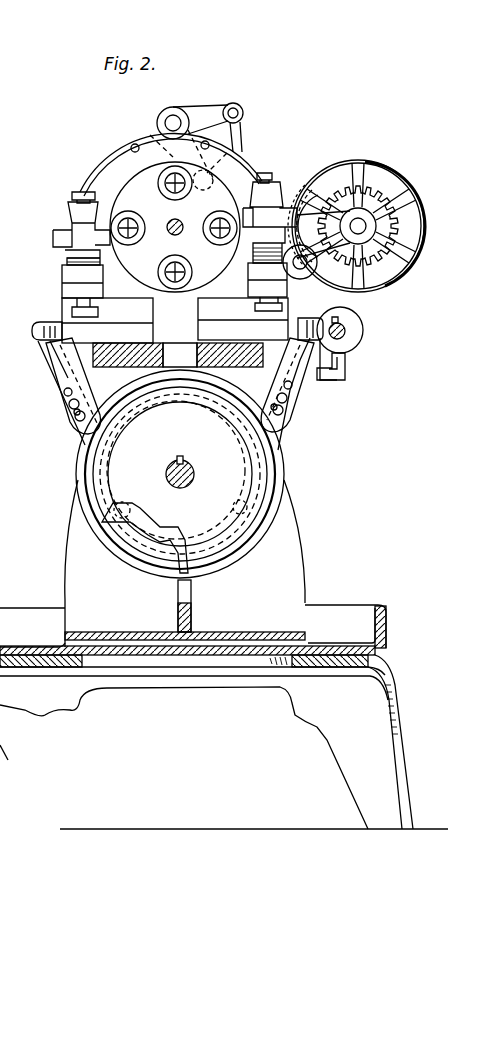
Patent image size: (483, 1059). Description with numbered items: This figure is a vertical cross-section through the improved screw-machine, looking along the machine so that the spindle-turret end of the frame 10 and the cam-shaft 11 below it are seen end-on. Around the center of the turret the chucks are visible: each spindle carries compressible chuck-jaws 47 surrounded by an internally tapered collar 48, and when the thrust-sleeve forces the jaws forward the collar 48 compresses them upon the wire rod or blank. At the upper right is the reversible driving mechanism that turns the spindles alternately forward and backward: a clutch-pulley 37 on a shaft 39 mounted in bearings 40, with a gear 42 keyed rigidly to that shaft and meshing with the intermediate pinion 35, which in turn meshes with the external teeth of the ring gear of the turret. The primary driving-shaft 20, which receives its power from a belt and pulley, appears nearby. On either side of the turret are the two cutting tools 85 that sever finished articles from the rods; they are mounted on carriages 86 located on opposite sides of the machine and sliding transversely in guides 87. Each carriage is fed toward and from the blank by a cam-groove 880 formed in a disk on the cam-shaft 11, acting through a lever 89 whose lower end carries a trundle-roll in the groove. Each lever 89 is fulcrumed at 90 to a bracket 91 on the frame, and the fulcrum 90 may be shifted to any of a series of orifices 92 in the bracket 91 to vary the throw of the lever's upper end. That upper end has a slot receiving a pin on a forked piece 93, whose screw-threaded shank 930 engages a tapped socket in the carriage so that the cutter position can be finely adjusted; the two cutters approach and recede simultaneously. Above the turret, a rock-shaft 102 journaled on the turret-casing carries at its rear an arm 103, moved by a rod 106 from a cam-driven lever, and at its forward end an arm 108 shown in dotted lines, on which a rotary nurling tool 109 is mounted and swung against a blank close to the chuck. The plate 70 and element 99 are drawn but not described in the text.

The frame 10 is at (306, 556).
The cam-shaft 11 is at (195, 477).
The primary driving-shaft 20 is at (364, 331).
The intermediate pinion 35 is at (318, 287).
The clutch-pulley 37 is at (424, 246).
The shaft 39 is at (362, 222).
The bearings 40 is at (358, 208).
The gear 42 is at (420, 262).
The chuck-jaws 47 is at (122, 222).
The internally tapered collar 48 is at (133, 172).
The plate 70 is at (123, 180).
The cutting tools 85 is at (68, 228).
The carriages 86 is at (63, 290).
The guides 87 is at (120, 343).
The levers 89 is at (55, 380).
The fulcrum 90 is at (66, 424).
The brackets 91 is at (180, 381).
The orifices 92 is at (62, 407).
The forked piece 93 is at (40, 343).
The ring 99 is at (262, 506).
The rock-shaft 102 is at (168, 117).
The arm 103 is at (232, 103).
The rod 106 is at (243, 135).
The arm 108 is at (160, 170).
The rotary nurling tool 109 is at (248, 157).
The cam-grooves 880 is at (132, 540).
The screw-threaded shank 930 is at (46, 322).